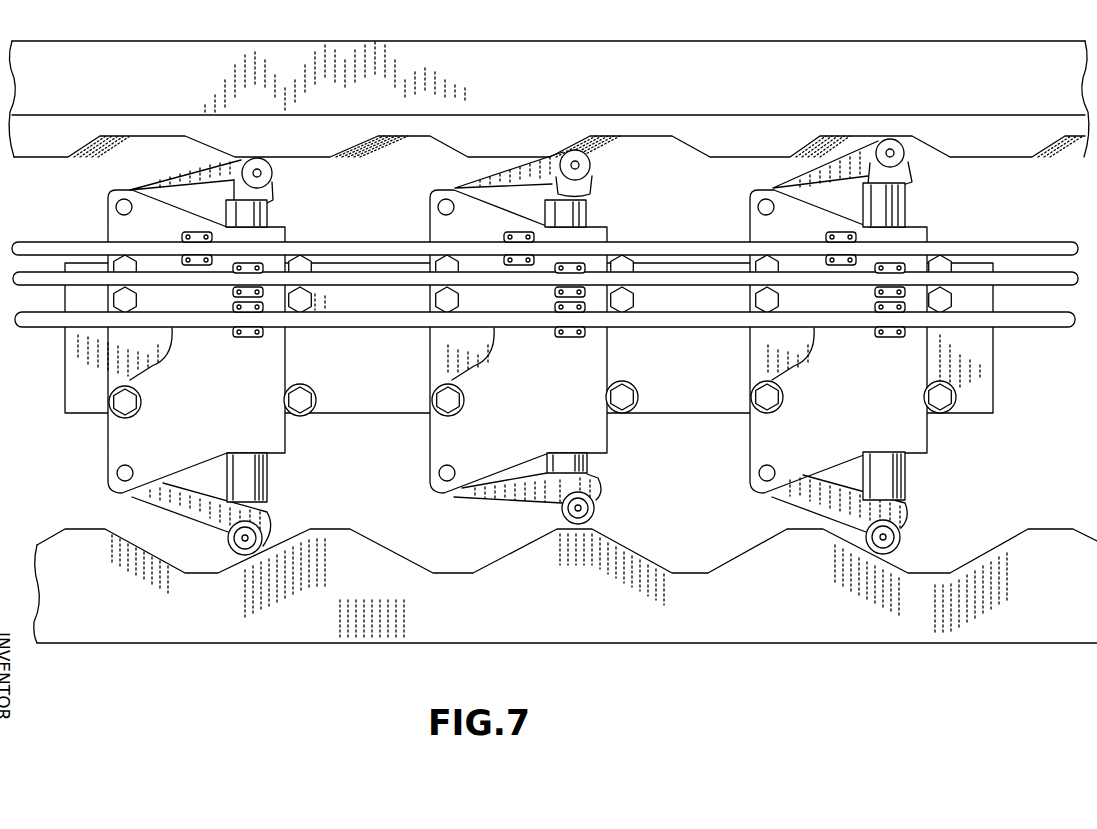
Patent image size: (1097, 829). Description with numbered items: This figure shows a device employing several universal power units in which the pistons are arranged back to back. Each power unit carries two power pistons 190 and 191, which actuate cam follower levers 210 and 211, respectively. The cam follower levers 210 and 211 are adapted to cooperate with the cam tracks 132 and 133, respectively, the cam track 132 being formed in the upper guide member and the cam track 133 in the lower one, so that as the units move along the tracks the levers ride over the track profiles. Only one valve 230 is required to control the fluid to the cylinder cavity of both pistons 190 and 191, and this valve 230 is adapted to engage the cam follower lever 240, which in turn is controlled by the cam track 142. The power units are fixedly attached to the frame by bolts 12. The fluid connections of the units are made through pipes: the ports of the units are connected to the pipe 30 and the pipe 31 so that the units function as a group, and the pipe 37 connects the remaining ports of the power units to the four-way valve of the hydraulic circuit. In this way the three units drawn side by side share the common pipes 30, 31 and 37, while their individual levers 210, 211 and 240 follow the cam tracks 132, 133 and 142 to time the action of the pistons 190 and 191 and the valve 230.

The bolts 12 is at (630, 397).
The pipe 30 is at (715, 327).
The pipe 31 is at (707, 284).
The pipe 37 is at (694, 246).
The cam track 132 is at (1051, 158).
The cam track 133 is at (1042, 531).
The cam track 142 is at (1030, 168).
The power piston 190 is at (907, 199).
The power piston 191 is at (265, 487).
The cam follower lever 210 is at (190, 163).
The cam follower lever 211 is at (268, 520).
The valve 230 is at (889, 217).
The cam follower lever 240 is at (268, 194).